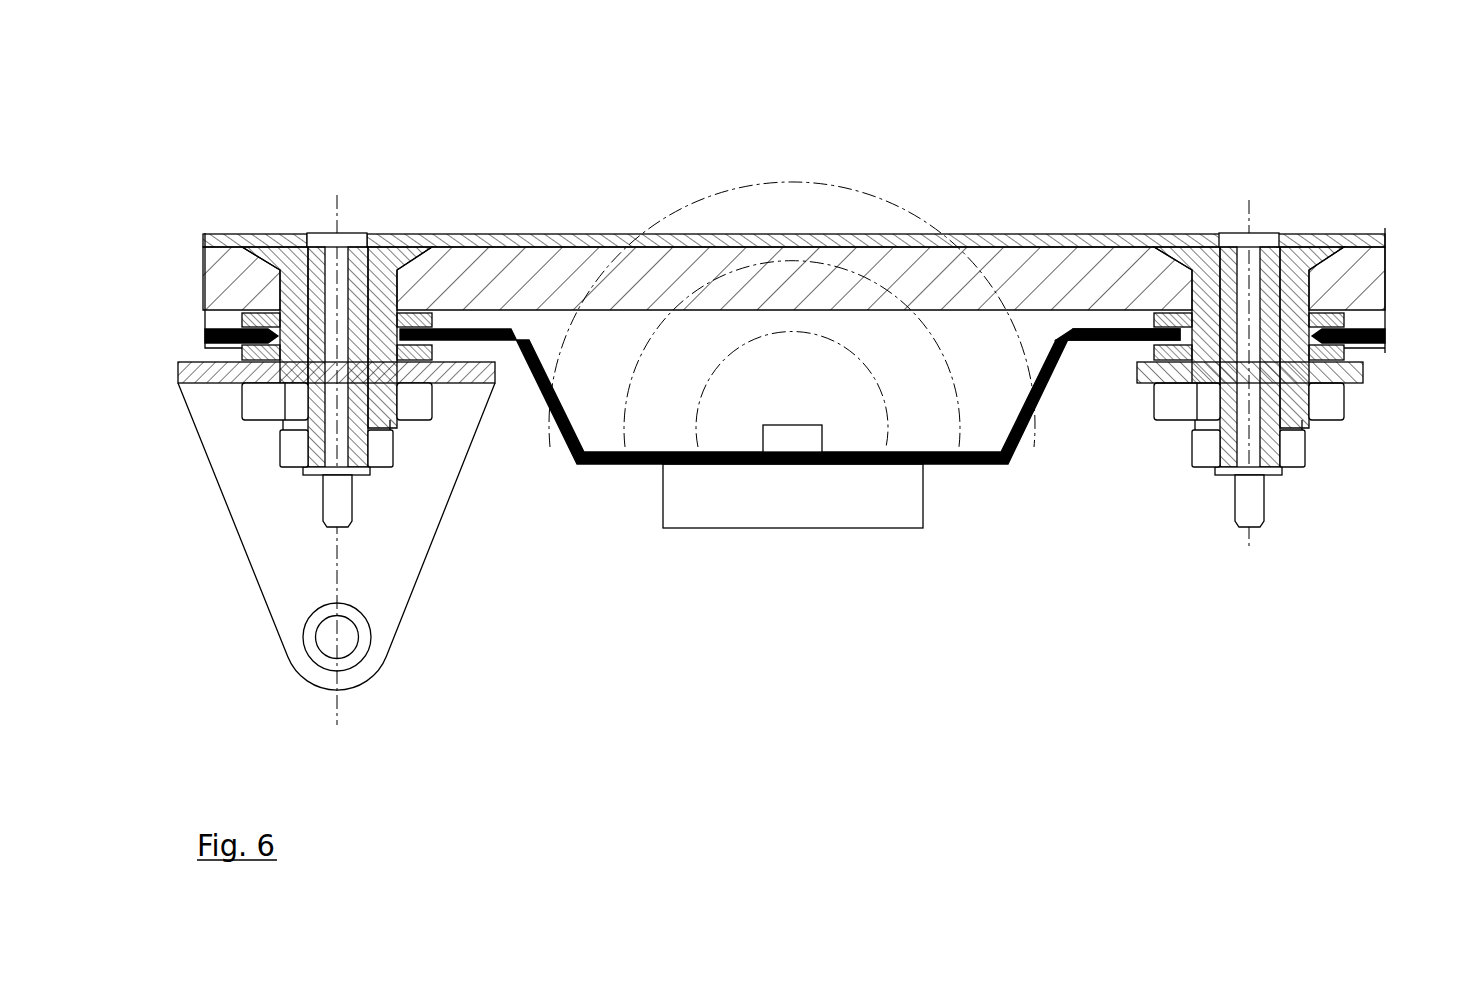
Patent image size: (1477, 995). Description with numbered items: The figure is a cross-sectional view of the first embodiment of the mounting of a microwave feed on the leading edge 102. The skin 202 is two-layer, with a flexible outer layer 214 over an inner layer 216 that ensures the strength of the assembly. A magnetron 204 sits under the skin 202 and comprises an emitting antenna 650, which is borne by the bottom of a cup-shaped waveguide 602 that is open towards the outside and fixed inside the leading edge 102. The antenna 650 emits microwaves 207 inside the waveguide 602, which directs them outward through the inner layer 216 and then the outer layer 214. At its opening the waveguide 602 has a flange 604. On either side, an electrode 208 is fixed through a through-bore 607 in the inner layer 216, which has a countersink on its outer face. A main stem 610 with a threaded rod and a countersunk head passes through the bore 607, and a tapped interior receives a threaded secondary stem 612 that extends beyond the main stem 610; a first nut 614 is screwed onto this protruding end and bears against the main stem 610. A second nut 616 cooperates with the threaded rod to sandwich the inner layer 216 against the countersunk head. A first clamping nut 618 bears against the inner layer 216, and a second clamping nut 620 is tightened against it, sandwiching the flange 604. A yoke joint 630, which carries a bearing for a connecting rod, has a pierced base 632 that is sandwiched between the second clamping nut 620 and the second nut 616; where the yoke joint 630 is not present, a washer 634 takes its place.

The leading edge 102 is at (1065, 117).
The skin 202 is at (1348, 127).
The magnetron 204 is at (755, 542).
The microwaves 207 is at (888, 200).
The electrode 208 is at (345, 243).
The outer layer 214 is at (1370, 243).
The inner layer 216 is at (1365, 278).
The waveguide 602 is at (983, 465).
The flange 604 is at (1110, 343).
The through-bore 607 is at (472, 238).
The main stem 610 is at (270, 236).
The secondary stem 612 is at (388, 244).
The first nut 614 is at (297, 447).
The second nut 616 is at (267, 402).
The first clamping nut 618 is at (572, 243).
The second clamping nut 620 is at (488, 385).
The yoke joint 630 is at (278, 548).
The base 632 is at (200, 362).
The washer 634 is at (1363, 375).
The emitting antenna 650 is at (790, 442).